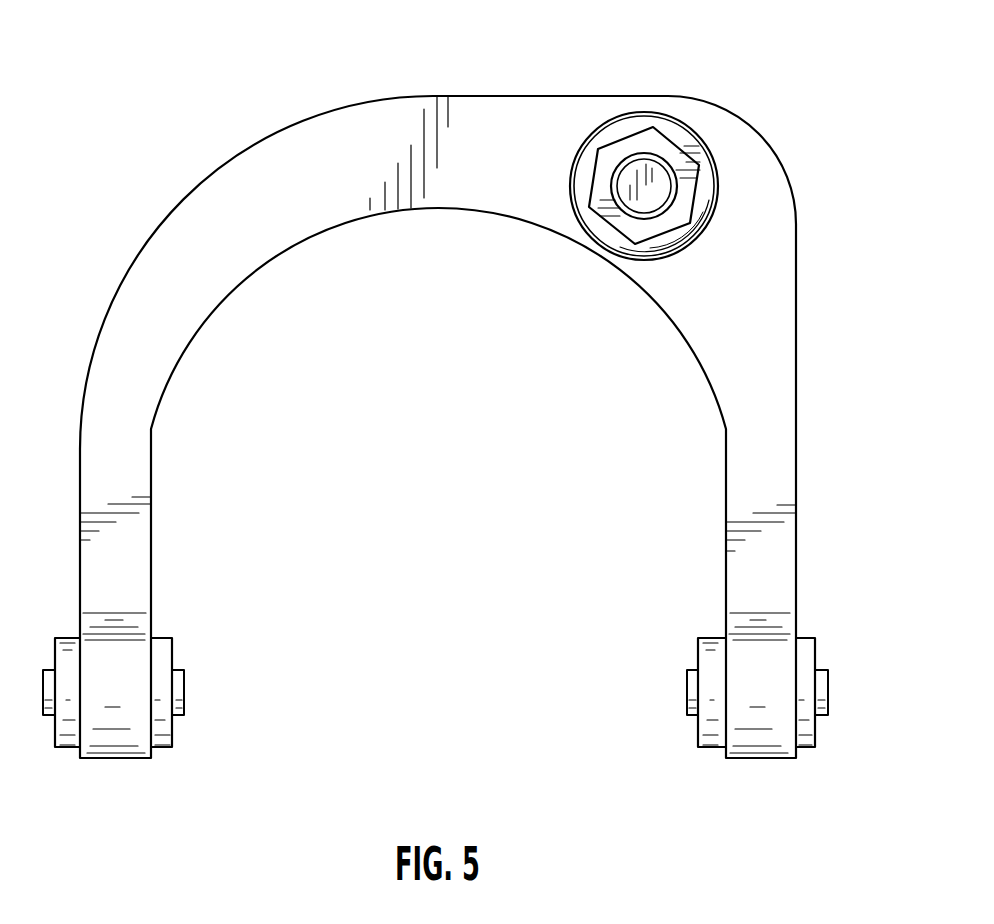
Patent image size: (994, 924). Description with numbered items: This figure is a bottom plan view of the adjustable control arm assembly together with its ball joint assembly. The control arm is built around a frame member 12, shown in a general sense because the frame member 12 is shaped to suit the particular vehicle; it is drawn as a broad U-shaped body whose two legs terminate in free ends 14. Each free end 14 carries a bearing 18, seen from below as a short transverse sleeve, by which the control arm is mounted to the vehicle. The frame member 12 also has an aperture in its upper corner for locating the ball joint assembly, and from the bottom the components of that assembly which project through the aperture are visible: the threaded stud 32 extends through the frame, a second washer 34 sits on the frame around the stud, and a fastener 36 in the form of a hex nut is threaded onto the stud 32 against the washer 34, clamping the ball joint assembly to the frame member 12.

The frame member 12 is at (707, 313).
The free end 14 is at (116, 750).
The bearing 18 is at (162, 737).
The threaded stud 32 is at (643, 207).
The second washer 34 is at (673, 130).
The fastener 36 is at (683, 202).